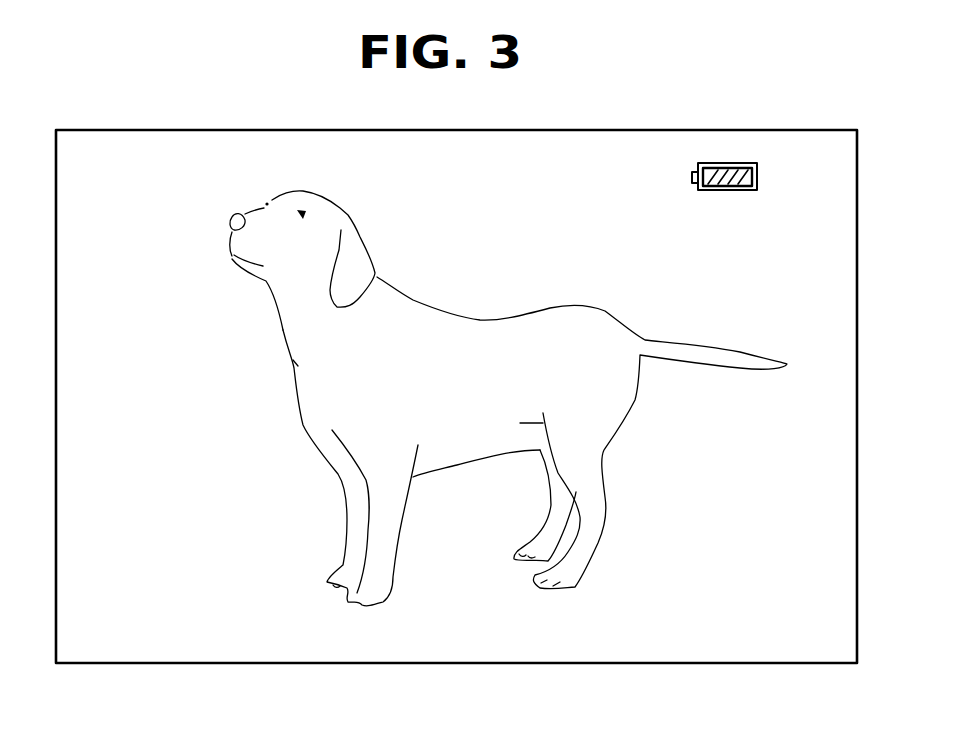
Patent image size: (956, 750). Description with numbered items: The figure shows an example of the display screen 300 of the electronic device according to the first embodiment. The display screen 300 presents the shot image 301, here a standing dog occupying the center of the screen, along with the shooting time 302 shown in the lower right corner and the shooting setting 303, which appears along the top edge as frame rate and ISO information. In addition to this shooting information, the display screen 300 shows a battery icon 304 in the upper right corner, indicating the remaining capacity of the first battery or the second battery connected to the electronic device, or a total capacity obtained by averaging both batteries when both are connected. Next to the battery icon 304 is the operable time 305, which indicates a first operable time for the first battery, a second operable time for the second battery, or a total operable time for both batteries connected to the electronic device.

The display screen 300 is at (634, 130).
The shot image 301 is at (453, 508).
The shooting time 302 is at (748, 655).
The shooting setting 303 is at (150, 137).
The battery icon 304 is at (728, 164).
The operable time 305 is at (812, 164).